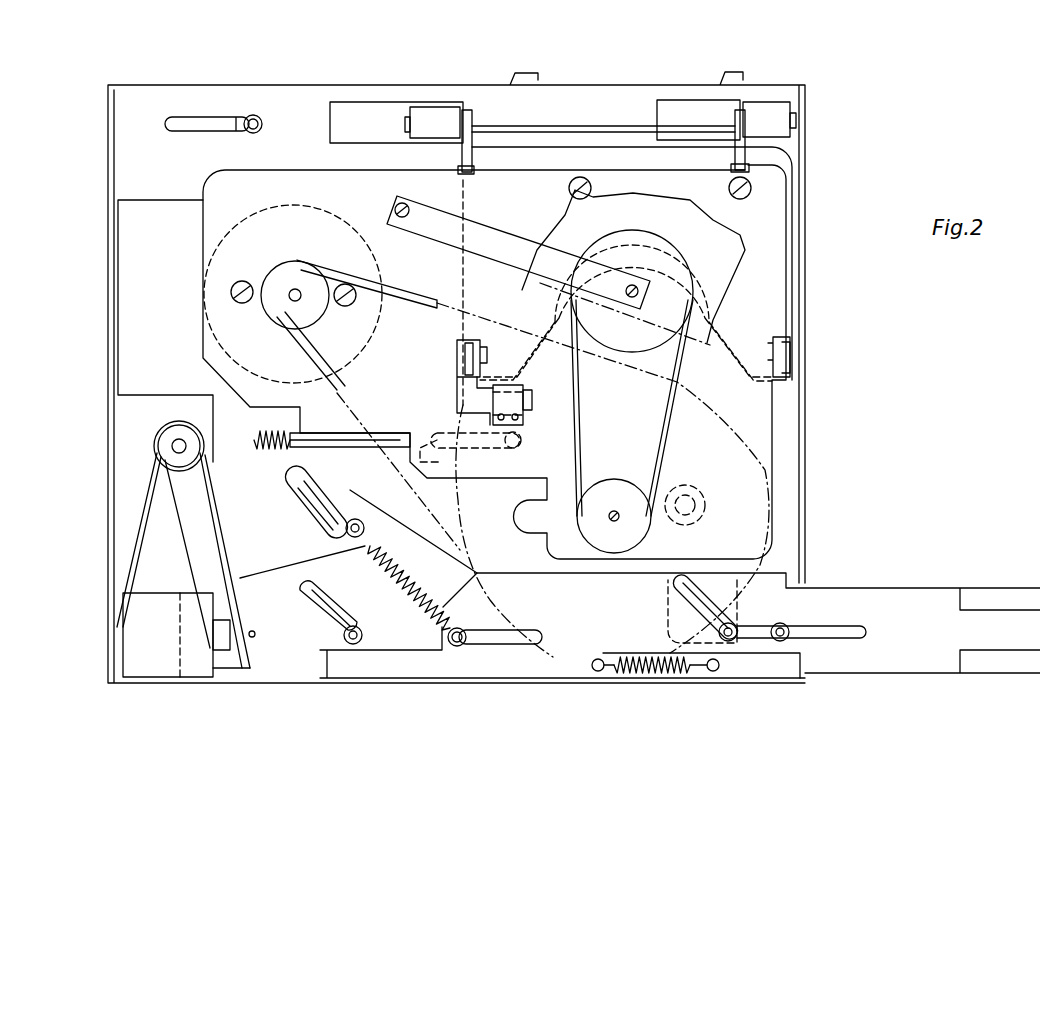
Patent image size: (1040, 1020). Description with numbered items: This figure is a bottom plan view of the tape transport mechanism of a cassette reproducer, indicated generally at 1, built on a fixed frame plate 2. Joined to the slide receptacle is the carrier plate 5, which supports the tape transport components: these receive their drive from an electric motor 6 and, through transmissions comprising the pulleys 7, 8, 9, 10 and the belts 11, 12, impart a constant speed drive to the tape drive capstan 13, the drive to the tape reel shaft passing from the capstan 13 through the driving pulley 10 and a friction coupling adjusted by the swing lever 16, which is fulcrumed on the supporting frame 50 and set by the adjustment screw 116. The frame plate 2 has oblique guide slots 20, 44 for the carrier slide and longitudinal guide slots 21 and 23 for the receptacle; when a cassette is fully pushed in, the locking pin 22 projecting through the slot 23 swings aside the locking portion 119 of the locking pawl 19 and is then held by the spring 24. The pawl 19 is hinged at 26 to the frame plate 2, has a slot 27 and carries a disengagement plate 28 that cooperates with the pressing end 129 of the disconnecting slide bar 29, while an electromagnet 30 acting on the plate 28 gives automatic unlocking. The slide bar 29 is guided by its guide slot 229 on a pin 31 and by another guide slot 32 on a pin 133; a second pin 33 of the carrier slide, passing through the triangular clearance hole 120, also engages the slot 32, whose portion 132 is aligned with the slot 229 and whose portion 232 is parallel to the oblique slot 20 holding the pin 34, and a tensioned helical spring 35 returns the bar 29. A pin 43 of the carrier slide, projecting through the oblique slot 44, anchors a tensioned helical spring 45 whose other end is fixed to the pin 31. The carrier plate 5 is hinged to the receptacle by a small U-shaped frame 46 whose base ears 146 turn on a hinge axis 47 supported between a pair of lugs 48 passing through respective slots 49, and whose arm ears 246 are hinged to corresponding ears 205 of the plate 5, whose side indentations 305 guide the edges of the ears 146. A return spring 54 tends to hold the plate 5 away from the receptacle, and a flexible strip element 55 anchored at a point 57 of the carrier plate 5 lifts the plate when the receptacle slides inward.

The photocopying machine 1 is at (103, 328).
The fixed frame plate 2 is at (118, 165).
The carrier plate 5 is at (770, 406).
The electric motor 6 is at (238, 230).
The pulley 7 is at (295, 262).
The pulley 8 is at (770, 452).
The pulley 9 is at (622, 545).
The driving pulley 10 is at (690, 300).
The belt 11 is at (300, 345).
The belt 12 is at (668, 430).
The tape drive capstan 13 is at (614, 510).
The swing lever 16 is at (500, 245).
The locking pawl 19 is at (253, 563).
The oblique guide slot 20 is at (332, 612).
The longitudinal guide slot 21 is at (207, 118).
The locking pin 22 is at (522, 445).
The longitudinal guide slot 23 is at (437, 432).
The spring 24 is at (135, 515).
The hinge 26 is at (178, 440).
The slot 27 is at (300, 483).
The disengagement plate 28 is at (250, 660).
The disconnecting slide bar 29 is at (904, 590).
The electromagnet 30 is at (130, 665).
The pin 31 is at (462, 645).
The guide slot 32 is at (829, 615).
The second pin 33 is at (736, 630).
The pin 34 is at (362, 636).
The tensioned helical spring 35 is at (604, 660).
The pin 43 is at (358, 520).
The oblique guide slot 44 is at (326, 505).
The tensioned helical spring 45 is at (415, 586).
The U-shaped frame 46 is at (786, 160).
The hinge axis 47 is at (598, 126).
The lugs 48 is at (436, 107).
The slots 49 is at (365, 102).
The supporting frame 50 is at (743, 200).
The return spring 54 is at (256, 435).
The flexible strip element 55 is at (532, 400).
The anchoring point 57 is at (493, 402).
The adjustment screw 116 is at (393, 208).
The locking portion 119 is at (460, 490).
The triangular clearance hole 120 is at (665, 637).
The pressing end 129 is at (333, 665).
The slot portion 132 is at (866, 632).
The pin 133 is at (786, 638).
The ears 146 is at (472, 118).
The ears 205 is at (457, 343).
The guide slot 229 is at (538, 630).
The slot portion 232 is at (688, 598).
The ears 246 is at (465, 358).
The side indentations 305 is at (458, 172).